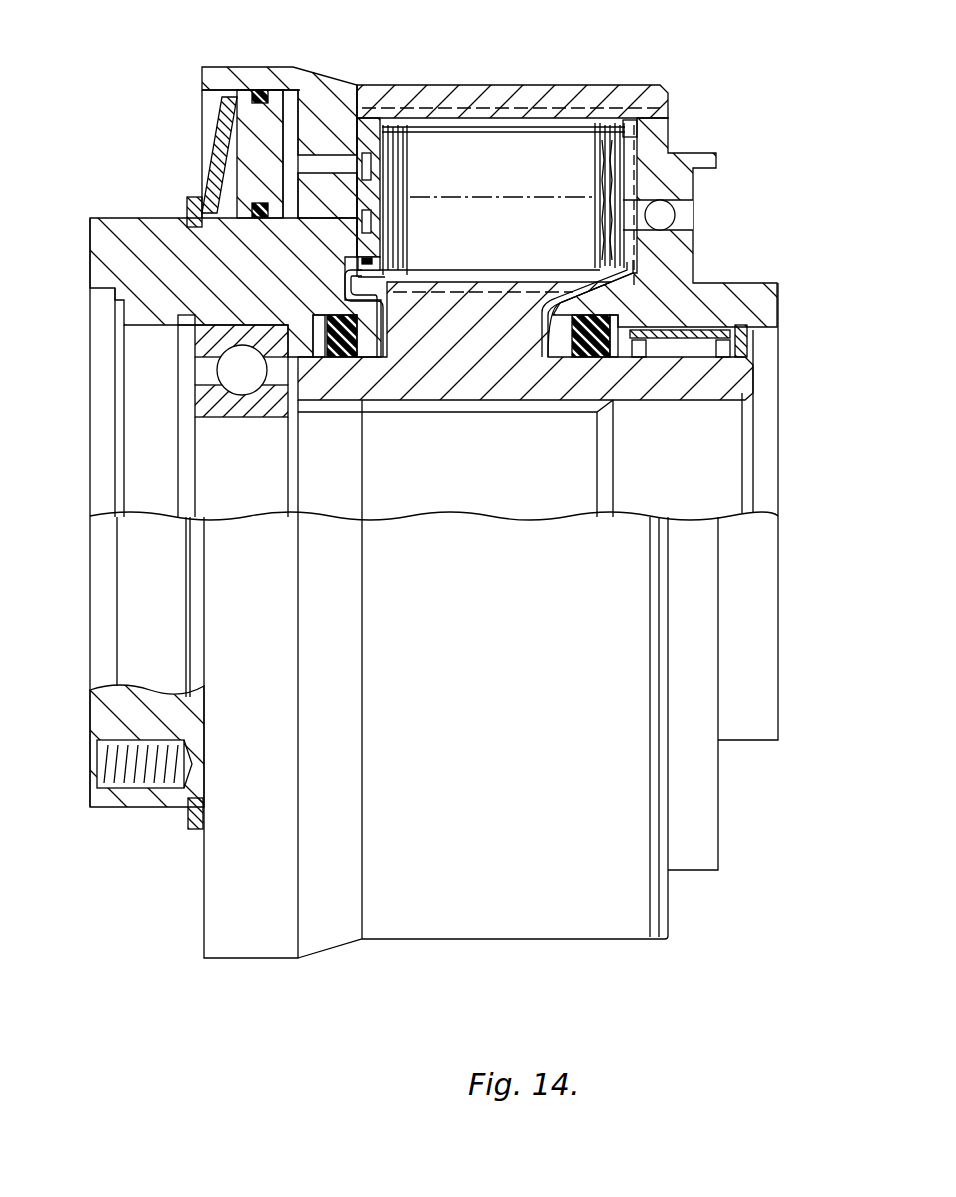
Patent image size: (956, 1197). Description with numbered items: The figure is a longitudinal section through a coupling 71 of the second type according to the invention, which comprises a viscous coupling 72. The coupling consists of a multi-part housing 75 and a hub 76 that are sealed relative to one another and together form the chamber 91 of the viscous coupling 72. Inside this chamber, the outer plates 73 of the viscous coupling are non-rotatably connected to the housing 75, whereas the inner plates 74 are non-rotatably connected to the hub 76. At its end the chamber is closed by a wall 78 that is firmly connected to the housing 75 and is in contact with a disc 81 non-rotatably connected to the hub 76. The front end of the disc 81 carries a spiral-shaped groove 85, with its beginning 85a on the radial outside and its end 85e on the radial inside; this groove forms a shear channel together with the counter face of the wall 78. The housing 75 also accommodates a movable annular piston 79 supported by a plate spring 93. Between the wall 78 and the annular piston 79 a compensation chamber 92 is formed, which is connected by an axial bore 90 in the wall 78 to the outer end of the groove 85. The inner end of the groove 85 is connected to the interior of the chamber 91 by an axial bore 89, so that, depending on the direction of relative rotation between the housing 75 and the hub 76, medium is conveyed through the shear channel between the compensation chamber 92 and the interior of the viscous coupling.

The coupling 71 is at (752, 133).
The viscous coupling 72 is at (497, 92).
The outer plates 73 is at (597, 178).
The inner plates 74 is at (597, 233).
The multi-part housing 75 is at (631, 90).
The hub 76 is at (740, 368).
The wall 78 is at (205, 248).
The annular piston 79 is at (248, 145).
The disc 81 is at (372, 147).
The groove 85 is at (366, 222).
The beginning of the groove 85a is at (368, 165).
The end of the groove 85e is at (362, 258).
The axial bore 89 is at (380, 262).
The axial bore 90 is at (315, 160).
The chamber 91 is at (538, 143).
The compensation chamber 92 is at (290, 93).
The plate spring 93 is at (212, 173).